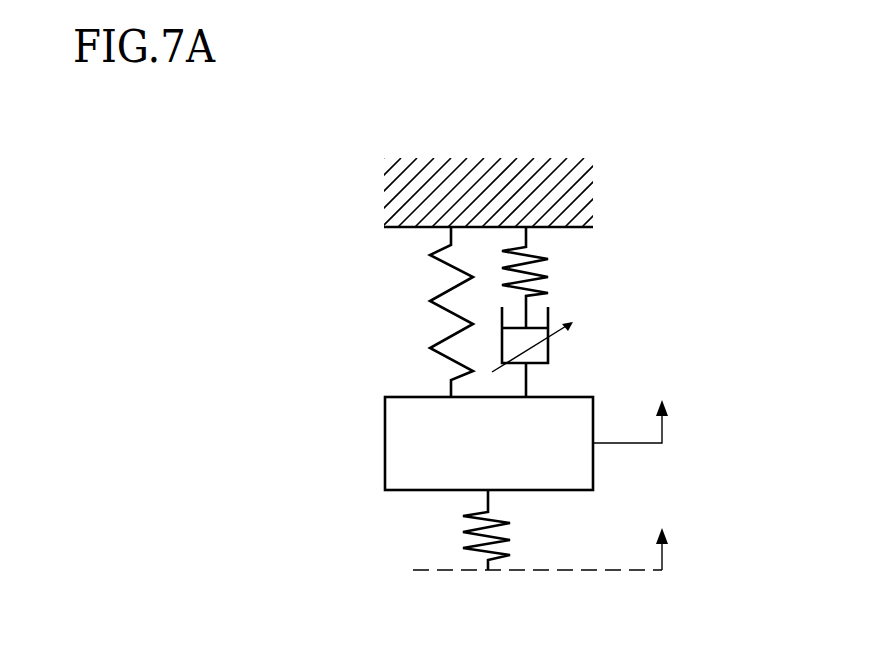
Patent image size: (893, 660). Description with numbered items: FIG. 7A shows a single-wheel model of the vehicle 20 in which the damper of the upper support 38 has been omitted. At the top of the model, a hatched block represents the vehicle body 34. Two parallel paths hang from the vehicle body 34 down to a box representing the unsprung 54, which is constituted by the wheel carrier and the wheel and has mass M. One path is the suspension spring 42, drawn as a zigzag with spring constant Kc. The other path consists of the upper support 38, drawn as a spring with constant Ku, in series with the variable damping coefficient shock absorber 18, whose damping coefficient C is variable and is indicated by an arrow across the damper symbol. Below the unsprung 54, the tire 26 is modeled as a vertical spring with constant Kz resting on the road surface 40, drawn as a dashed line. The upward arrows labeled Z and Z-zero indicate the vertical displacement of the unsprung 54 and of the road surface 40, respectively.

The vehicle 20 is at (646, 194).
The vehicle body 34 is at (482, 170).
The suspension spring 42 is at (430, 346).
The upper support 38 is at (532, 252).
The variable damping coefficient shock absorber 18 is at (550, 363).
The unsprung 54 is at (395, 443).
The tire 26 is at (505, 533).
The road surface 40 is at (432, 566).